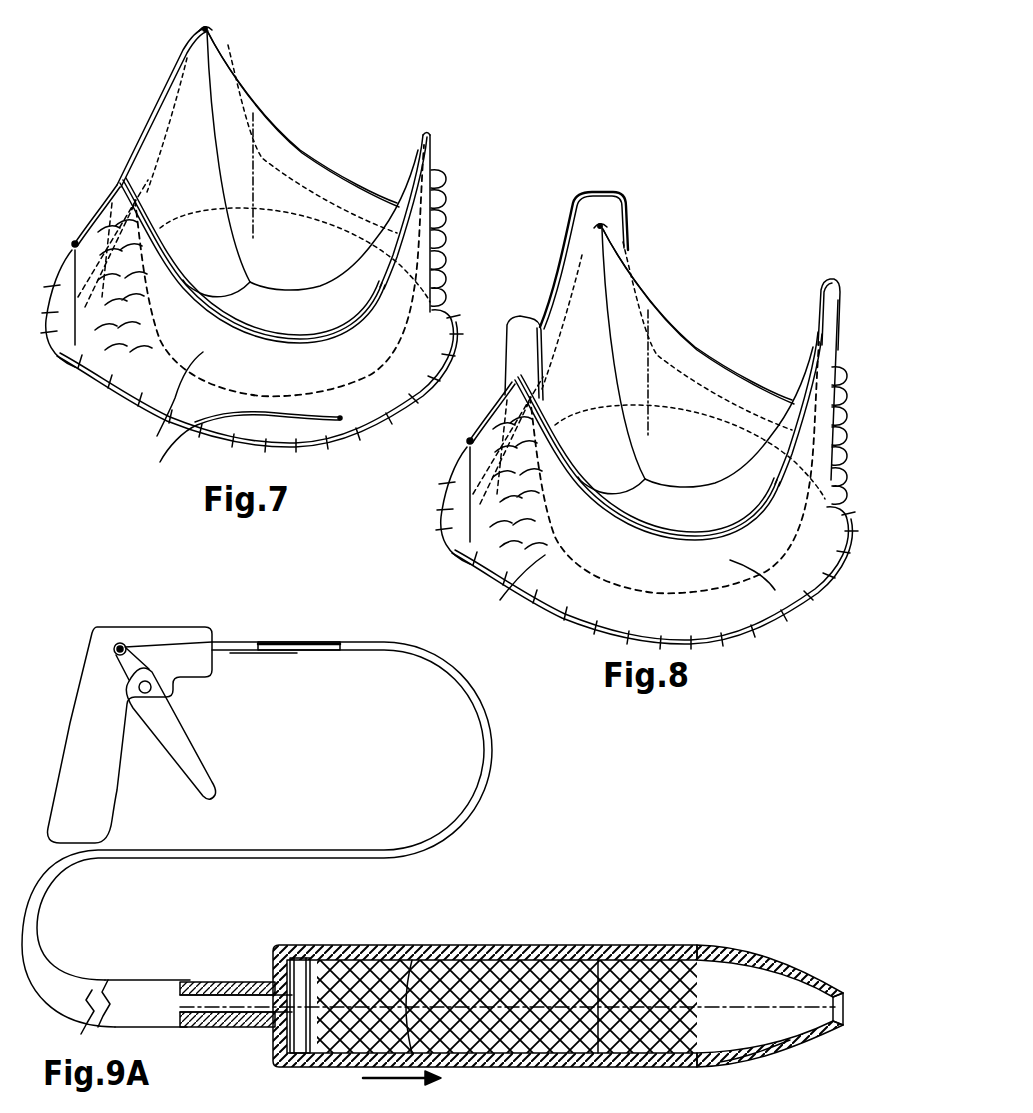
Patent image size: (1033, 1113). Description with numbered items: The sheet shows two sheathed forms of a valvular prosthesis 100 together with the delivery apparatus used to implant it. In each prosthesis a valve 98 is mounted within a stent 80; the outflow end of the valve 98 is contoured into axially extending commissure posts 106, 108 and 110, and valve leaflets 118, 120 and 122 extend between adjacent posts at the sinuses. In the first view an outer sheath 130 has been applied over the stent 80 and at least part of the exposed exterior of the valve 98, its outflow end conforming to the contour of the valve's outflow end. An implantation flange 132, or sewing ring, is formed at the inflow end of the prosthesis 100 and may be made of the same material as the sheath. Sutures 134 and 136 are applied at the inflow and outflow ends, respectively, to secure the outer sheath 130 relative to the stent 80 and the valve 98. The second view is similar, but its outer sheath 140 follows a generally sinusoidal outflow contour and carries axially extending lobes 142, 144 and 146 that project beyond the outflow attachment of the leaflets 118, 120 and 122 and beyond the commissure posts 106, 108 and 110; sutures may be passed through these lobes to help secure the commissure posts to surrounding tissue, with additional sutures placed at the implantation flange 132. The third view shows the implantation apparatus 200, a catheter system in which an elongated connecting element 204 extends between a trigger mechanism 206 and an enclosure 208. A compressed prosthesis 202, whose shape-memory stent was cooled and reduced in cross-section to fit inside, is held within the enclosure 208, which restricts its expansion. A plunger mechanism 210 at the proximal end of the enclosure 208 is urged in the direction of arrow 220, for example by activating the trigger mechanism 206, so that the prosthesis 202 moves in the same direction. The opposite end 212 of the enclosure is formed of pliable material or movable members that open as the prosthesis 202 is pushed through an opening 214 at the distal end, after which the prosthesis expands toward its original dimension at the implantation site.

In FIG. 7, the stent 80 is at (216, 385).
In FIG. 8, the stent 80 is at (598, 577).
In FIG. 7, the valve 98 is at (324, 172).
In FIG. 8, the valve 98 is at (702, 349).
In FIG. 7, the valvular prosthesis 100 is at (318, 103).
In FIG. 8, the valvular prosthesis 100 is at (723, 252).
In FIG. 7, the commissure post 106 is at (138, 183).
In FIG. 8, the commissure post 106 is at (552, 412).
In FIG. 7, the commissure post 108 is at (213, 42).
In FIG. 8, the commissure post 108 is at (617, 225).
In FIG. 7, the commissure post 110 is at (430, 137).
In FIG. 8, the commissure post 110 is at (820, 346).
In FIG. 7, the valve leaflet 118 is at (207, 196).
In FIG. 8, the valve leaflet 118 is at (612, 443).
In FIG. 7, the valve leaflet 120 is at (310, 268).
In FIG. 8, the valve leaflet 120 is at (697, 460).
In FIG. 7, the valve leaflet 122 is at (287, 318).
In FIG. 8, the valve leaflet 122 is at (680, 513).
In FIG. 7, the outer sheath 130 is at (157, 436).
In FIG. 7, the implantation flange 132 is at (285, 445).
In FIG. 8, the implantation flange 132 is at (712, 640).
In FIG. 7, the sutures 134 is at (195, 422).
In FIG. 7, the sutures 136 is at (183, 57).
In FIG. 8, the outer sheath 140 is at (540, 570).
In FIG. 8, the axially extending lobe 142 is at (515, 333).
In FIG. 8, the axially extending lobe 144 is at (606, 210).
In FIG. 8, the axially extending lobe 146 is at (836, 298).
In FIG. 9A, the implantation apparatus 200 is at (293, 1069).
In FIG. 9A, the prosthesis 202 is at (430, 960).
In FIG. 9A, the elongated connecting element 204 is at (85, 980).
In FIG. 9A, the trigger mechanism 206 is at (165, 627).
In FIG. 9A, the enclosure 208 is at (305, 948).
In FIG. 9A, the plunger mechanism 210 is at (283, 942).
In FIG. 9A, the opposite end 212 is at (760, 1067).
In FIG. 9A, the opening 214 is at (841, 993).
In FIG. 9A, the arrow 220 is at (378, 1080).